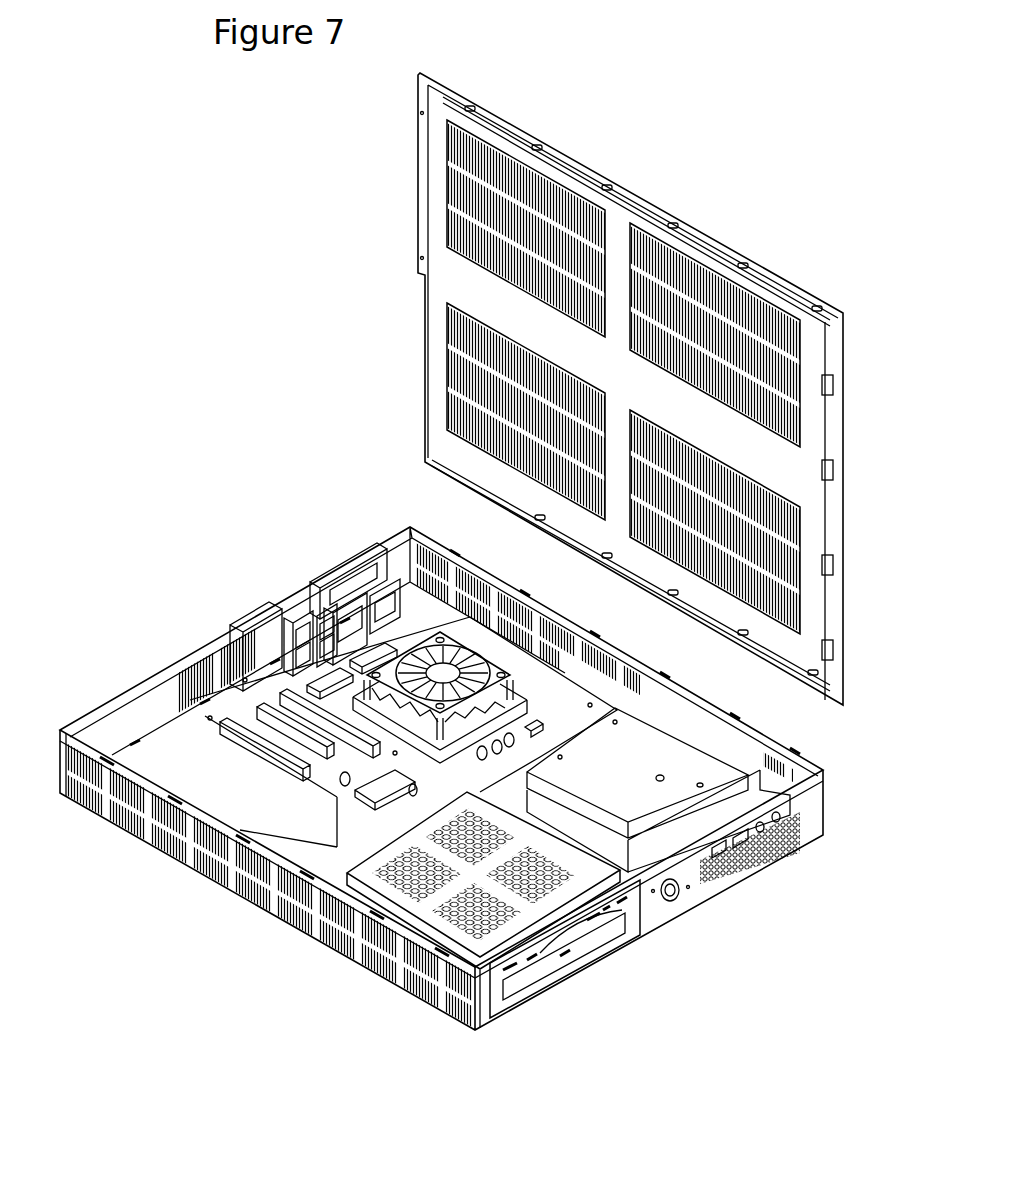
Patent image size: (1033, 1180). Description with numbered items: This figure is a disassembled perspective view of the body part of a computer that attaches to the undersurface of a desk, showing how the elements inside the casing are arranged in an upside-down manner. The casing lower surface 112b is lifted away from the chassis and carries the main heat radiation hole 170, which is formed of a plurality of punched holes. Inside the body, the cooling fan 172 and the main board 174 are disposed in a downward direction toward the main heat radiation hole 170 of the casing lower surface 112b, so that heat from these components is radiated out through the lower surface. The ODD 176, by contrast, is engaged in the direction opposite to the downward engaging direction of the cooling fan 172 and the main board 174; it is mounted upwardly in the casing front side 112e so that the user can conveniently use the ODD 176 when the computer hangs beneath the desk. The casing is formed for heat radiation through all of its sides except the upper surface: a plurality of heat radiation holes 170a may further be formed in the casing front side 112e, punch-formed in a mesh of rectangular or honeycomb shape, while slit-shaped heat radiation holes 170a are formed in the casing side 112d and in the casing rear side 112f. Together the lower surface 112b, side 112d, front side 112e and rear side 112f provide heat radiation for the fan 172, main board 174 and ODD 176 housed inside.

The casing lower surface 112b is at (447, 286).
The main heat radiation hole 170 is at (490, 355).
The main board 174 is at (398, 630).
The cooling fan 172 is at (467, 660).
The casing rear side 112f is at (213, 674).
The casing side 112d is at (233, 882).
The ODD 176 is at (583, 944).
The casing front side 112e is at (693, 888).
The heat radiation hole 170a is at (757, 855).